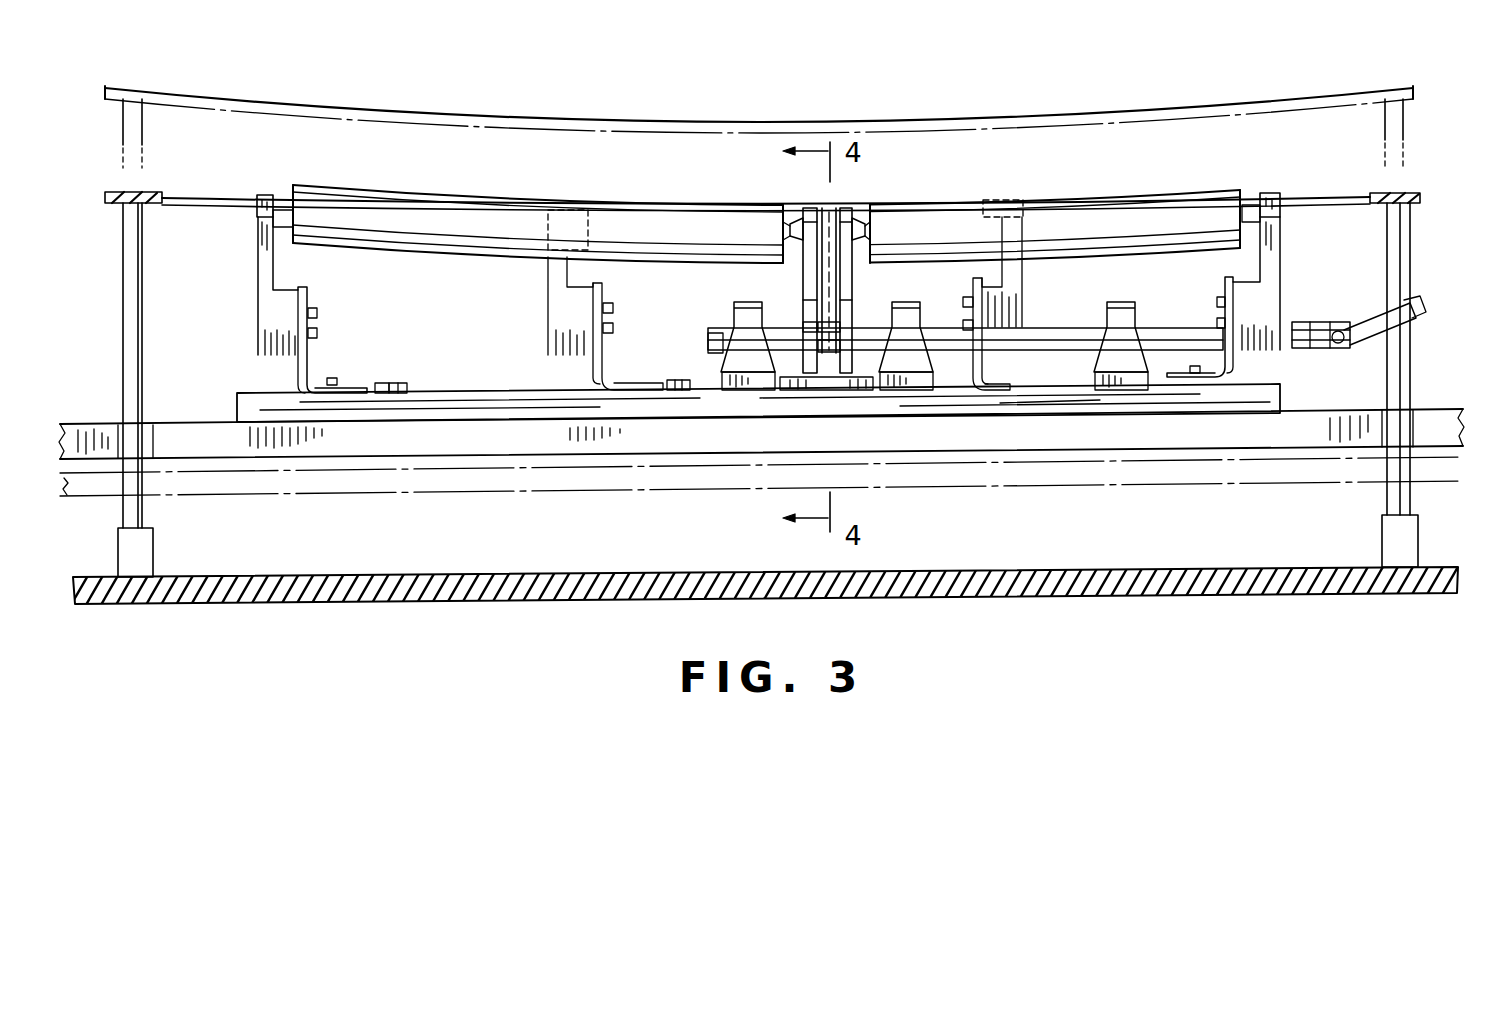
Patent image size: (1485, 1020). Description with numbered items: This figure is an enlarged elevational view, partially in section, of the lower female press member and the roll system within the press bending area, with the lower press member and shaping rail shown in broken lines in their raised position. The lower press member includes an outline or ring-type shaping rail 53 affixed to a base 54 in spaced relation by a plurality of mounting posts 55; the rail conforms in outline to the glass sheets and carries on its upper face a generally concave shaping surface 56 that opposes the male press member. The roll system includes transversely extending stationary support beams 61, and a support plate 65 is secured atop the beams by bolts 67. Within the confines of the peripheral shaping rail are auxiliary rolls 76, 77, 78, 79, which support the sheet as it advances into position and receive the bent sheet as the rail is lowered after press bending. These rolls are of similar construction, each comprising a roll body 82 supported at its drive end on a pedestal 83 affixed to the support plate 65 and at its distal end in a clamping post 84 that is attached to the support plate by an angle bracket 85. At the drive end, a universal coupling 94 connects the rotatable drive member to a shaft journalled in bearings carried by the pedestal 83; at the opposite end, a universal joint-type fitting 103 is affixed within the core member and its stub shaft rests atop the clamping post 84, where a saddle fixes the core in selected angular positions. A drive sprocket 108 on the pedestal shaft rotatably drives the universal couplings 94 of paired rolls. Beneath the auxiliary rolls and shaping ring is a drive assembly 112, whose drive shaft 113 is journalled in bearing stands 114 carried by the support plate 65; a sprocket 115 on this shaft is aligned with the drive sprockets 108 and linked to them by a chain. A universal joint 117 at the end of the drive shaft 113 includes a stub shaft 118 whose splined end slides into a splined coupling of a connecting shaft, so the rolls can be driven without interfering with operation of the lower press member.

The shaping rail 53 is at (1328, 203).
The base 54 is at (571, 580).
The mounting posts 55 is at (125, 330).
The concave shaping surface 56 is at (1398, 195).
The stationary support beams 61 is at (447, 440).
The support plate 65 is at (1178, 395).
The bolts 67 is at (393, 383).
The auxiliary roll 76 is at (580, 200).
The auxiliary roll 77 is at (996, 200).
The auxiliary roll 78 is at (514, 212).
The auxiliary roll 79 is at (1105, 205).
The roll body 82 is at (766, 195).
The pedestal 83 is at (852, 293).
The clamping post 84 is at (265, 270).
The angle bracket 85 is at (300, 370).
The universal coupling 94 is at (789, 232).
The universal joint-type fitting 103 is at (280, 207).
The drive sprocket 108 is at (833, 208).
The drive assembly 112 is at (1030, 368).
The drive shaft 113 is at (1050, 346).
The bearing stands 114 is at (743, 331).
The sprocket 115 is at (812, 328).
The universal joint 117 is at (1362, 350).
The stub shaft 118 is at (1410, 305).